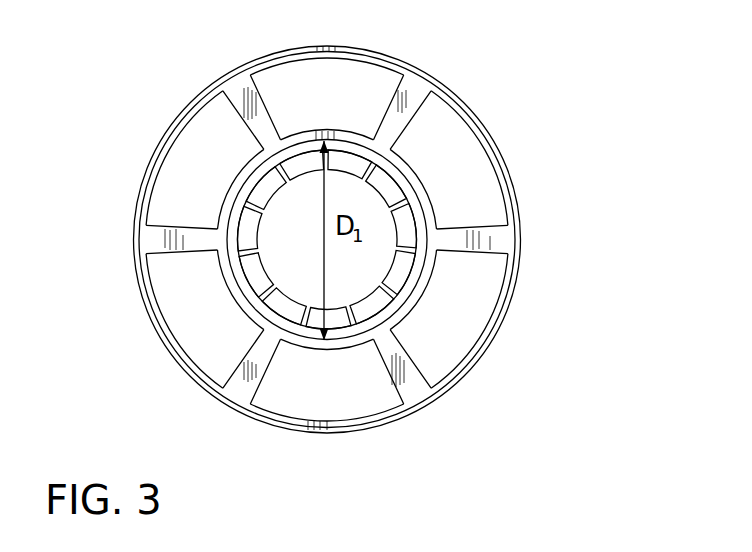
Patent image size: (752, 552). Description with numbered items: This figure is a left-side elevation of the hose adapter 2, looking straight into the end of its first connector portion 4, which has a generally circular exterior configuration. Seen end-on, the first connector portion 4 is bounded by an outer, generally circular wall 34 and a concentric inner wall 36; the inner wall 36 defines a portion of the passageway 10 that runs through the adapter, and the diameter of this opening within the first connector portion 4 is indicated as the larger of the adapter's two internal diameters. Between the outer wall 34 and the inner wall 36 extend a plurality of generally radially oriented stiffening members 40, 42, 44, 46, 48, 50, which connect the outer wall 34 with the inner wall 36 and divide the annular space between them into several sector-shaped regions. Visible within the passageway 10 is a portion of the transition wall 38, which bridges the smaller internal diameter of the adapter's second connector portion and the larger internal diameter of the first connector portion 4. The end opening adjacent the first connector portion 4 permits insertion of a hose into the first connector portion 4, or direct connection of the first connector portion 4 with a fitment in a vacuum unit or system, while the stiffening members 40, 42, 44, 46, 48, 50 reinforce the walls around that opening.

The hose adapter 2 is at (580, 172).
The first connector portion 4 is at (323, 434).
The passageway 10 is at (308, 250).
The outer wall 34 is at (158, 338).
The inner wall 36 is at (423, 292).
The transition wall 38 is at (415, 198).
The stiffening member 40 is at (507, 239).
The stiffening member 42 is at (408, 92).
The stiffening member 44 is at (242, 92).
The stiffening member 46 is at (142, 239).
The stiffening member 48 is at (240, 388).
The stiffening member 50 is at (408, 395).